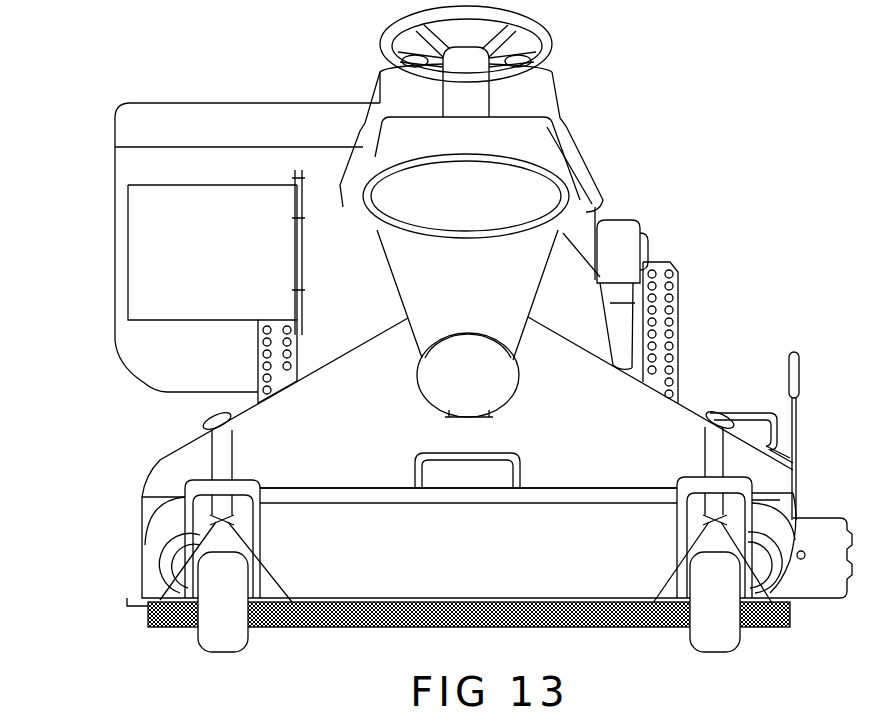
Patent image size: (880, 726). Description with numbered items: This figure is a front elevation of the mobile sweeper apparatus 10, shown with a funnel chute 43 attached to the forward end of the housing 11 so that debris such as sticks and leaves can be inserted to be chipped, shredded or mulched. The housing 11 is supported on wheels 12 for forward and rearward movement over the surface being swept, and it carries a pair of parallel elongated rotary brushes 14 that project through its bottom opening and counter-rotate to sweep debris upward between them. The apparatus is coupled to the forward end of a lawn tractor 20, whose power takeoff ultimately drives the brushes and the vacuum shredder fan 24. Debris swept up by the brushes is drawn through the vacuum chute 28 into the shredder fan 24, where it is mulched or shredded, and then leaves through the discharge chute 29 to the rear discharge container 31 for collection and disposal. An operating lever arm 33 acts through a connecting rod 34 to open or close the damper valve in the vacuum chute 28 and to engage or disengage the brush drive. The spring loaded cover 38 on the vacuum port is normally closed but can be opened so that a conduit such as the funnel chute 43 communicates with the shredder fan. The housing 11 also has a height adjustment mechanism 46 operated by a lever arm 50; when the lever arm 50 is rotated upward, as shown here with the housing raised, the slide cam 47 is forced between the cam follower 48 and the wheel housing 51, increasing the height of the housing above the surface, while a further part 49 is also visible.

The mobile sweeper apparatus 10 is at (143, 438).
The housing 11 is at (165, 470).
The wheels 12 is at (230, 645).
The rotary brushes 14 is at (518, 626).
The lawn tractor 20 is at (553, 147).
The vacuum shredder fan 24 is at (342, 207).
The vacuum chute 28 is at (318, 418).
The discharge chute 29 is at (250, 212).
The rear discharge container 31 is at (148, 168).
The operating lever arm 33 is at (797, 352).
The connecting rod 34 is at (768, 413).
The spring loaded cover 38 is at (480, 377).
The funnel chute 43 is at (463, 297).
The height adjustment mechanism 46 is at (277, 618).
The slide cam 47 is at (150, 623).
The cam follower 48 is at (305, 618).
The arm 49 is at (172, 570).
The lever arm 50 is at (540, 493).
The wheel housing 51 is at (203, 487).